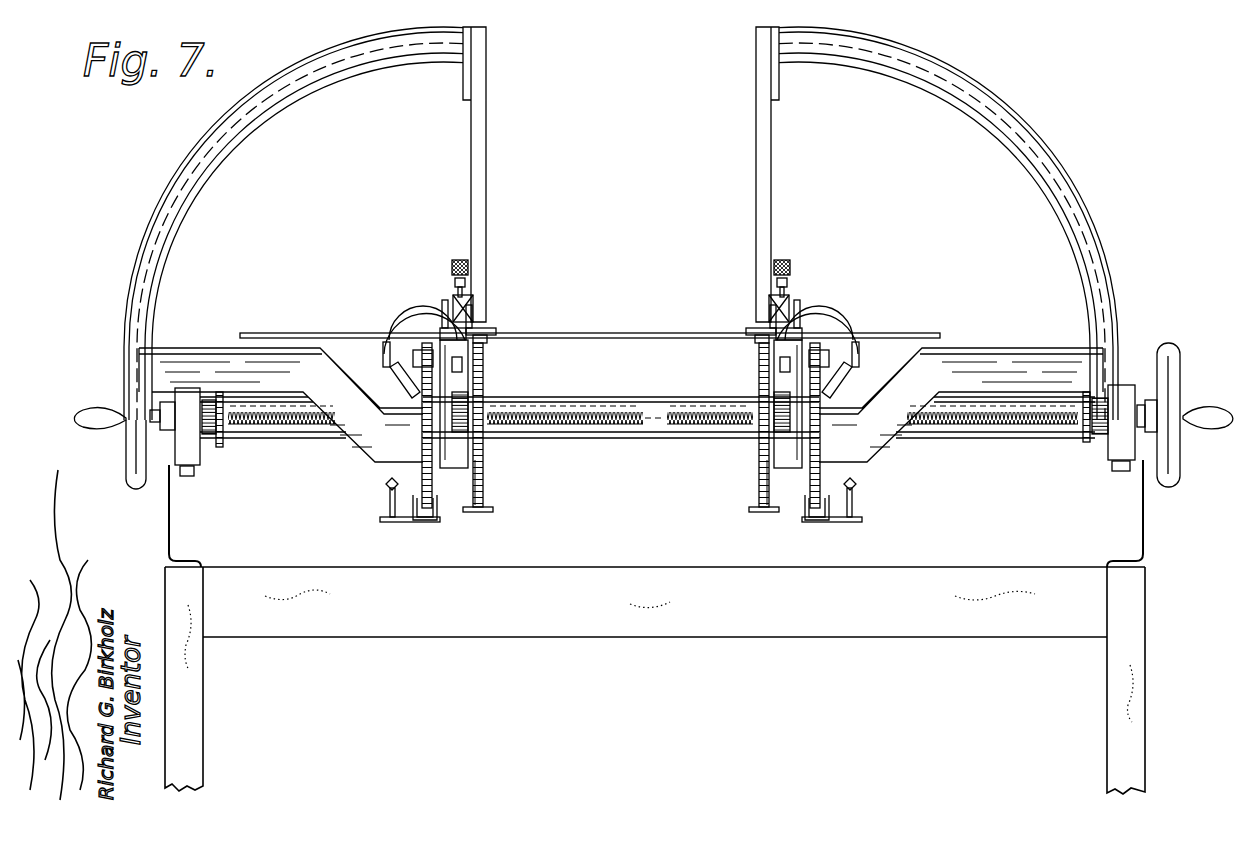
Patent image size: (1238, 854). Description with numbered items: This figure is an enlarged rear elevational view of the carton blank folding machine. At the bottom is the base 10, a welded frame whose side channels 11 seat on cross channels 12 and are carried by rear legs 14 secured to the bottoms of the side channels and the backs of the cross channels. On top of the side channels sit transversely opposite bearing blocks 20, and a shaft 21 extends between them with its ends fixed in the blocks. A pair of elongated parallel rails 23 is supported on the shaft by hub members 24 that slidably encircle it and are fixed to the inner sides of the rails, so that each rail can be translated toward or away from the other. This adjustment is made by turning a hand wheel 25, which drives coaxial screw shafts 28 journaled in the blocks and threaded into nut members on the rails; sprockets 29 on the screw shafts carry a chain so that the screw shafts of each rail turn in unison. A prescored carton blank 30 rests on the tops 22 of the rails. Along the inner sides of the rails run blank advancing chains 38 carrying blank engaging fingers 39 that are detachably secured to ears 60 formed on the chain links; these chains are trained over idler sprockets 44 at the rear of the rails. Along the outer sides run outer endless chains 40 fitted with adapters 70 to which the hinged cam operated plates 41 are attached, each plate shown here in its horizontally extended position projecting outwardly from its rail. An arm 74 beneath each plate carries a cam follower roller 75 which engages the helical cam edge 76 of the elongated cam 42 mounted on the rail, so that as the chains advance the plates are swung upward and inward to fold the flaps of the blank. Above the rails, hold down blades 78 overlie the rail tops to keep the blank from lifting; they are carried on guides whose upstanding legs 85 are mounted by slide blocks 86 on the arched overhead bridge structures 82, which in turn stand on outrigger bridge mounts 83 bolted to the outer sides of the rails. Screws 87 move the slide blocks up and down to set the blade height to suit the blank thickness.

The base 10 is at (152, 526).
The side channels 11 is at (173, 530).
The cross channels 12 is at (513, 582).
The rear legs 14 is at (197, 733).
The bearing blocks 20 is at (198, 455).
The shaft 21 is at (600, 440).
The tops of the rails 22 is at (441, 333).
The rails 23 is at (454, 468).
The hub members 24 is at (475, 397).
The hand wheel 25 is at (130, 452).
The screw shafts 28 is at (237, 405).
The sprockets 29 is at (223, 440).
The carton blank 30 is at (628, 334).
The blank advancing chains 38 is at (485, 492).
The blank engaging fingers 39 is at (492, 330).
The outer endless chains 40 is at (422, 474).
The hinged cam operated plates 41 is at (403, 337).
The cams 42 is at (420, 296).
The idler sprockets 44 is at (485, 450).
The ears 60 is at (495, 510).
The adapters 70 is at (410, 356).
The arm 74 is at (388, 350).
The cam follower roller 75 is at (400, 373).
The cam edge 76 is at (402, 305).
The hold down blades 78 is at (446, 300).
The bridge structures 82 is at (200, 143).
The outrigger bridge mounts 83 is at (185, 362).
The upstanding legs of the guides 85 is at (478, 320).
The slide blocks 86 is at (475, 306).
The screws 87 is at (462, 258).